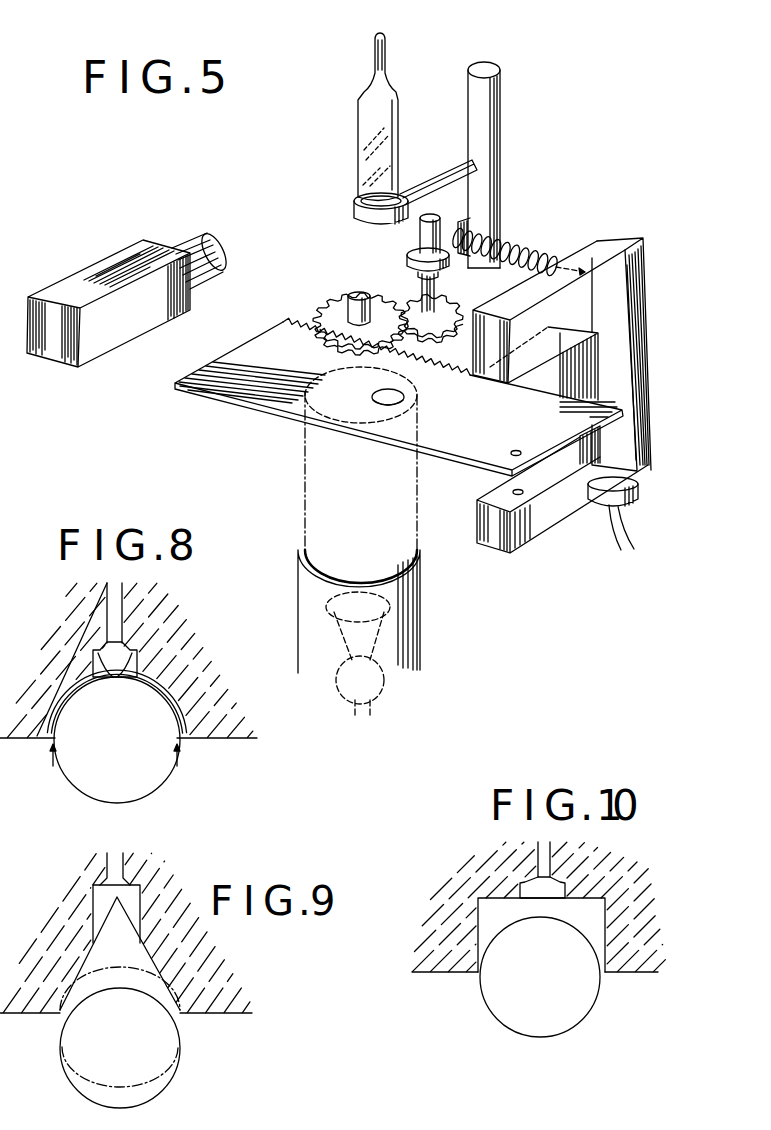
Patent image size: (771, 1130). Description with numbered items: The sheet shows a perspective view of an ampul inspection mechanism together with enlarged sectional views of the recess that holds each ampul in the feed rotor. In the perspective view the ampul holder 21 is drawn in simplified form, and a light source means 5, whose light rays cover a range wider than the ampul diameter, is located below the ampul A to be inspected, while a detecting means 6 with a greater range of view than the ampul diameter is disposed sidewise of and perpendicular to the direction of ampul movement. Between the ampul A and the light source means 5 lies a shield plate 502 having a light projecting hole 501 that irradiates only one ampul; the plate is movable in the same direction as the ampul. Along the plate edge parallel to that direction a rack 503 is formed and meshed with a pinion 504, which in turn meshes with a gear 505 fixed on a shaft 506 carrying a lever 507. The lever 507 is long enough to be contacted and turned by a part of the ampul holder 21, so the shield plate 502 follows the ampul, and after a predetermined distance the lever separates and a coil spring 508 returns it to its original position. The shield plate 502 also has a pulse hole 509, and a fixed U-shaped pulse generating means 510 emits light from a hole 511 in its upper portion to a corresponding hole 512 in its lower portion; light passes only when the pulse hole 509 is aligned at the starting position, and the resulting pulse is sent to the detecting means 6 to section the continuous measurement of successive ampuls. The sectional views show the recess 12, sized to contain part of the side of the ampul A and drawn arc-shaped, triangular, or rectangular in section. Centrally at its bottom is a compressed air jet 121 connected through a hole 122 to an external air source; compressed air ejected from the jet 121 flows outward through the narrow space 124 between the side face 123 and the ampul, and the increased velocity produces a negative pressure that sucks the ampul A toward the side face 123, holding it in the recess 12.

In FIG. 5, the light source means 5 is at (420, 627).
In FIG. 5, the detecting means 6 is at (135, 325).
In FIG. 5, the ampul holder 21 is at (503, 92).
In FIG. 5, the ampul A is at (363, 127).
In FIG. 8, the ampul A is at (160, 775).
In FIG. 5, the light projecting hole 501 is at (406, 402).
In FIG. 5, the shield plate 502 is at (215, 388).
In FIG. 5, the rack 503 is at (300, 317).
In FIG. 5, the pinion 504 is at (328, 305).
In FIG. 5, the gear 505 is at (450, 283).
In FIG. 5, the shaft 506 is at (420, 236).
In FIG. 5, the lever 507 is at (462, 222).
In FIG. 5, the coil spring 508 is at (542, 255).
In FIG. 5, the pulse hole 509 is at (518, 450).
In FIG. 5, the pulse generating means 510 is at (655, 226).
In FIG. 5, the upper hole 511 is at (515, 368).
In FIG. 5, the lower hole 512 is at (512, 492).
In FIG. 8, the recess 12 is at (162, 684).
In FIG. 8, the compressed air jet 121 is at (130, 648).
In FIG. 8, the hole 122 is at (118, 597).
In FIG. 8, the side face 123 is at (185, 693).
In FIG. 8, the narrow space 124 is at (193, 721).